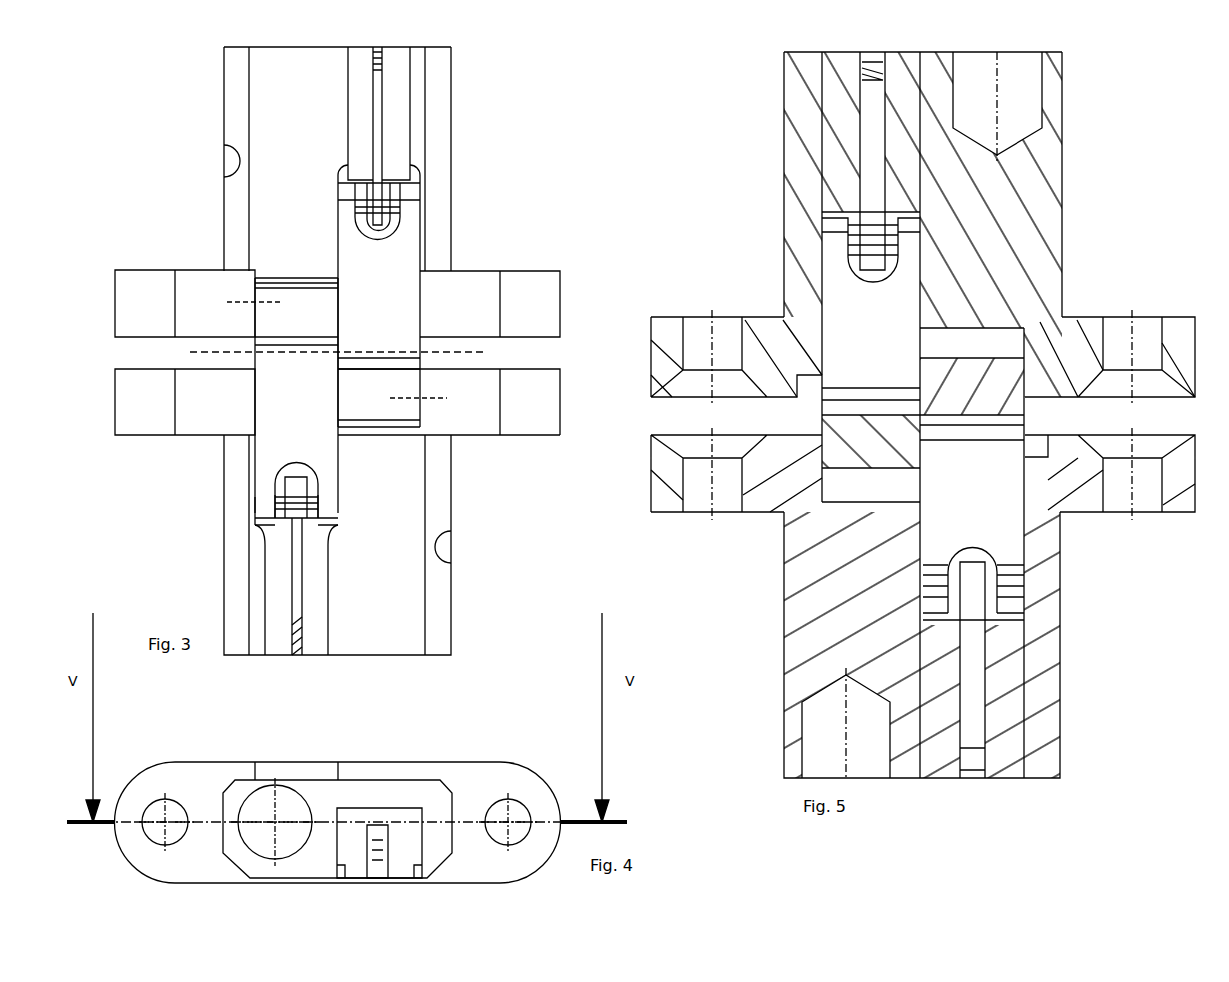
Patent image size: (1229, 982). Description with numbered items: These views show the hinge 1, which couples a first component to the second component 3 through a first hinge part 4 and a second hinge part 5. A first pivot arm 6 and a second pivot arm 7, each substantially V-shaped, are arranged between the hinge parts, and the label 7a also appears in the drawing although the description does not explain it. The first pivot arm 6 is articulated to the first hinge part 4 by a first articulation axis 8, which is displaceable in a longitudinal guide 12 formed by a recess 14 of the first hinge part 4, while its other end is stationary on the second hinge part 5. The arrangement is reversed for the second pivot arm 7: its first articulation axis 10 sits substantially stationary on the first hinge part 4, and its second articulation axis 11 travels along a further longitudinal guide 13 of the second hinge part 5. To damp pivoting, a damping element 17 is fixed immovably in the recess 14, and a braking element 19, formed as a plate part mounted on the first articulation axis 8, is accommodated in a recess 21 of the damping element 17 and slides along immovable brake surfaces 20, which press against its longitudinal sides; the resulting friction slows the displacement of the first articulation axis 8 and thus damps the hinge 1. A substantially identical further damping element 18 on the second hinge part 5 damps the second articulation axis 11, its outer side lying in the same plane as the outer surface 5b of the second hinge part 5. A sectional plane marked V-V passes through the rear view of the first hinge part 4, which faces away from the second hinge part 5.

In FIG. 3, the hinge 1 is at (110, 140).
In FIG. 5, the hinge 1 is at (1098, 218).
In FIG. 3, the second component 3 is at (427, 397).
In FIG. 3, the first hinge part 4 is at (560, 83).
In FIG. 4, the first hinge part 4 is at (523, 730).
In FIG. 5, the first hinge part 4 is at (1083, 128).
In FIG. 3, the second hinge part 5 is at (475, 542).
In FIG. 5, the second hinge part 5 is at (1108, 625).
In FIG. 3, the outer surface of the second hinge part 5b is at (403, 615).
In FIG. 3, the first pivot arm 6 is at (393, 303).
In FIG. 3, the second pivot arm 7 is at (283, 397).
In FIG. 3, the piston axis 7a is at (213, 350).
In FIG. 3, the first articulation axis 8 is at (397, 202).
In FIG. 5, the first articulation axis 8 is at (848, 240).
In FIG. 3, the first articulation axis of the second pivot arm 10 is at (245, 300).
In FIG. 3, the second articulation axis of the second pivot arm 11 is at (287, 500).
In FIG. 5, the second articulation axis of the second pivot arm 11 is at (940, 595).
In FIG. 3, the longitudinal guide 12 is at (413, 150).
In FIG. 4, the longitudinal guide 12 is at (397, 833).
In FIG. 3, the further longitudinal guide 13 is at (252, 500).
In FIG. 3, the recess 14 is at (358, 93).
In FIG. 3, the damping element 17 is at (398, 115).
In FIG. 3, the further damping element 18 is at (312, 610).
In FIG. 5, the further damping element 18 is at (1013, 710).
In FIG. 3, the braking element 19 is at (385, 90).
In FIG. 4, the braking element 19 is at (372, 822).
In FIG. 5, the braking element 19 is at (873, 170).
In FIG. 5, the brake surface 20 is at (880, 143).
In FIG. 5, the recess of the damping element 21 is at (875, 97).